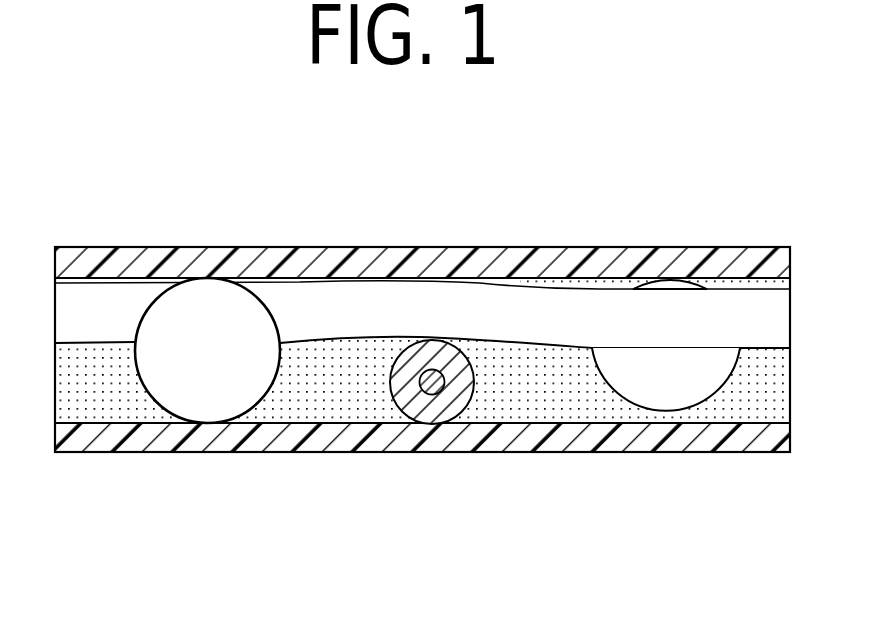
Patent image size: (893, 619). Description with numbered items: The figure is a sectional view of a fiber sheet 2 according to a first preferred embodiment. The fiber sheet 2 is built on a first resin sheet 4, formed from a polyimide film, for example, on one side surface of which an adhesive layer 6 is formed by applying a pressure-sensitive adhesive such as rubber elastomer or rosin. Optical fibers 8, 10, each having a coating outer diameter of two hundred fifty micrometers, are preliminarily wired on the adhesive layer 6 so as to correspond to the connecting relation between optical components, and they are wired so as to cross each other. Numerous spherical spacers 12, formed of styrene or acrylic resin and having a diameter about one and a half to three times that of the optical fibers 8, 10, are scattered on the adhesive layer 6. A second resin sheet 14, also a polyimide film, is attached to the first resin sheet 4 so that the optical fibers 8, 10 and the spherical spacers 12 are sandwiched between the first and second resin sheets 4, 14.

The fiber sheet 2 is at (528, 232).
The first resin sheet 4 is at (603, 452).
The adhesive layer 6 is at (333, 395).
The optical fiber 8 is at (432, 412).
The optical fiber 10 is at (414, 290).
The spherical spacer 12 is at (218, 290).
The second resin sheet 14 is at (663, 258).